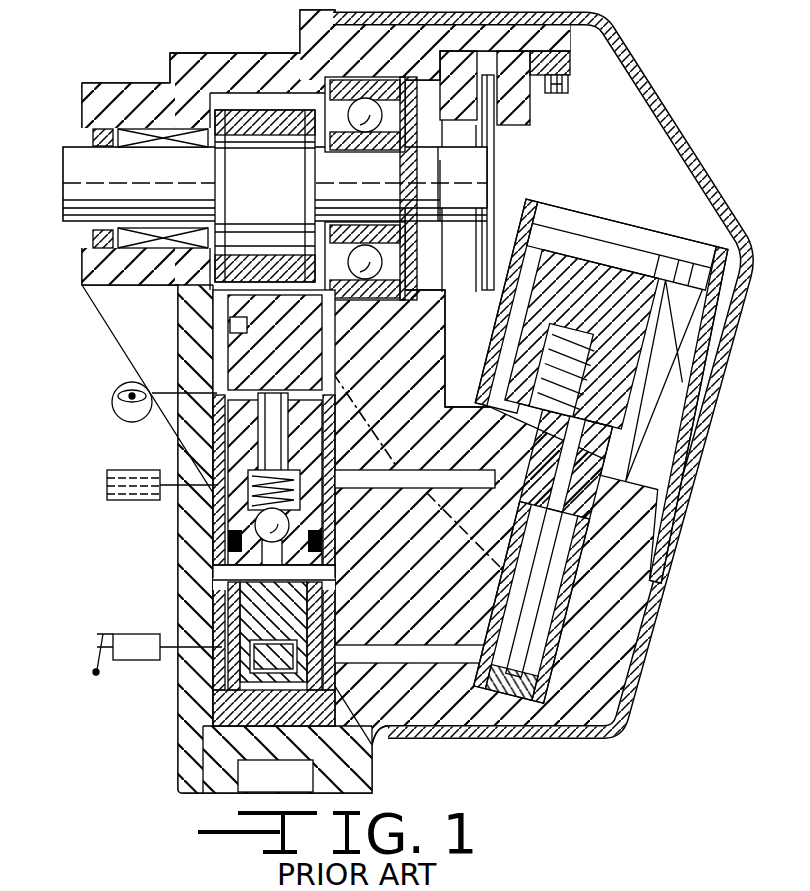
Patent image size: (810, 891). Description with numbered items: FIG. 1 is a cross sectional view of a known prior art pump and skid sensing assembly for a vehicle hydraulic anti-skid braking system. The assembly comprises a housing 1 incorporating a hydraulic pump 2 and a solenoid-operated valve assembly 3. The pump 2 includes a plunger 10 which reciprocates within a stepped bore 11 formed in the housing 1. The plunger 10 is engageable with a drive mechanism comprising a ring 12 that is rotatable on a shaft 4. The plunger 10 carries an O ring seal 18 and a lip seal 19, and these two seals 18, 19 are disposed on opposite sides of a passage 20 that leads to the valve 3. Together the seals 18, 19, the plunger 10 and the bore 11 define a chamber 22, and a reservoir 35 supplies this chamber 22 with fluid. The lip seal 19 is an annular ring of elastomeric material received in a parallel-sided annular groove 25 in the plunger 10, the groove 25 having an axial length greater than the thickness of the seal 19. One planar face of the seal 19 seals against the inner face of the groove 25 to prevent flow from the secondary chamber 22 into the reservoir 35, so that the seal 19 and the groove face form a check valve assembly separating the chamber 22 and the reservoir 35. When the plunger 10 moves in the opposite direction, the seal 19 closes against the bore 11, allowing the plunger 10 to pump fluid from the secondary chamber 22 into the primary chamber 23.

The housing 1 is at (397, 702).
The hydraulic pump 2 is at (235, 508).
The solenoid-operated valve assembly 3 is at (583, 430).
The shaft 4 is at (150, 183).
The plunger 10 is at (242, 352).
The stepped bore 11 is at (217, 400).
The ring 12 is at (258, 113).
The O ring seal 18 is at (217, 443).
The lip seal 19 is at (217, 537).
The passage 20 is at (430, 480).
The chamber 22 is at (332, 585).
The primary chamber 23 is at (420, 520).
The annular groove 25 is at (240, 623).
The reservoir 35 is at (126, 500).